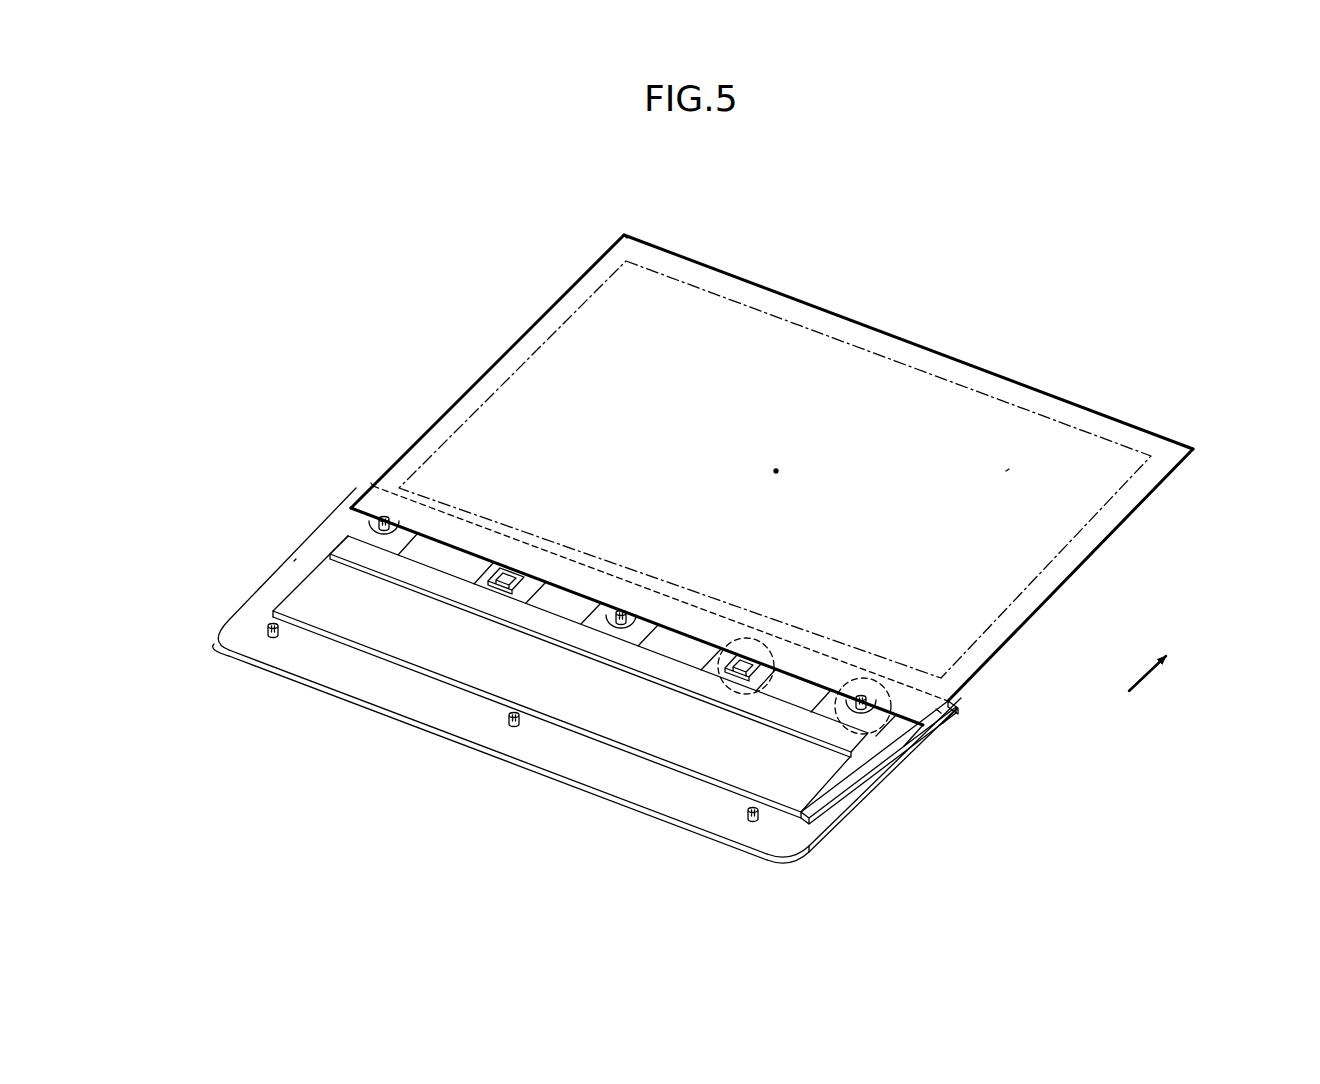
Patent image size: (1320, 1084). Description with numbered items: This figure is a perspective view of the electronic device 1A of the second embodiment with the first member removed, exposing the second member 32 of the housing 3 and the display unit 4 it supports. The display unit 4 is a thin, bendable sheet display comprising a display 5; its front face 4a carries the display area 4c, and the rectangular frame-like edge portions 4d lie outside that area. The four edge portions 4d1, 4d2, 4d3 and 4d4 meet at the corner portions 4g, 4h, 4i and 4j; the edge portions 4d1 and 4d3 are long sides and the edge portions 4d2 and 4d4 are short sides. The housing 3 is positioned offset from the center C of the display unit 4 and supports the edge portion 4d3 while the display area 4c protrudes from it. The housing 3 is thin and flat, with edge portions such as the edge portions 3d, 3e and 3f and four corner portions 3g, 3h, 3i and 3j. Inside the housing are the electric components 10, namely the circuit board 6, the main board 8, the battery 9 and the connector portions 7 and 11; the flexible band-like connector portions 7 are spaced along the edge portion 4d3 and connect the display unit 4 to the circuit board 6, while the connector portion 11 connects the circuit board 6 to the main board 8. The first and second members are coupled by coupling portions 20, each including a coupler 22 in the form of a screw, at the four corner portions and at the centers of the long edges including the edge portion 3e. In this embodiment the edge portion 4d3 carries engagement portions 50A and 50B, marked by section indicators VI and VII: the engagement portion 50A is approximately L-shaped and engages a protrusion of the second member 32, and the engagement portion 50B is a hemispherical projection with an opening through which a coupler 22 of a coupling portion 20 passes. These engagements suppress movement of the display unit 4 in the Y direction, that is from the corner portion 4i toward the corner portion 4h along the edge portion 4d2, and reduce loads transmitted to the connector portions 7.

The electronic device 1A is at (965, 272).
The housing 3 is at (588, 660).
The edge portion 3d is at (895, 775).
The edge portion 3e is at (472, 752).
The edge portion 3f is at (293, 560).
The corner portion 3g is at (367, 485).
The corner portion 3h is at (935, 708).
The corner portion 3i is at (783, 862).
The corner portion 3j is at (213, 634).
The display unit 4 is at (773, 526).
The face 4a is at (590, 345).
The display 5 is at (775, 460).
The display area 4c is at (1005, 470).
The edge portions 4d is at (772, 547).
The edge portion 4d1 is at (730, 272).
The edge portion 4d2 is at (1075, 568).
The edge portion 4d3 is at (793, 665).
The edge portion 4d4 is at (484, 372).
The corner portion 4g is at (623, 234).
The corner portion 4h is at (1192, 448).
The corner portion 4i is at (932, 718).
The corner portion 4j is at (370, 482).
The circuit board 6 is at (328, 542).
The connector portion 7 is at (709, 613).
The main board 8 is at (295, 578).
The battery 9 is at (845, 796).
The electric components 10 is at (608, 613).
The connector portion 11 is at (471, 622).
The coupling portion 20 is at (614, 673).
The coupler 22 is at (372, 522).
The second member 32 is at (587, 795).
The engagement portion 50A is at (505, 598).
The engagement portion 50B is at (630, 612).
The center C is at (775, 468).
The section line VI is at (742, 693).
The section line VII is at (890, 702).
The Y direction Y is at (1147, 678).